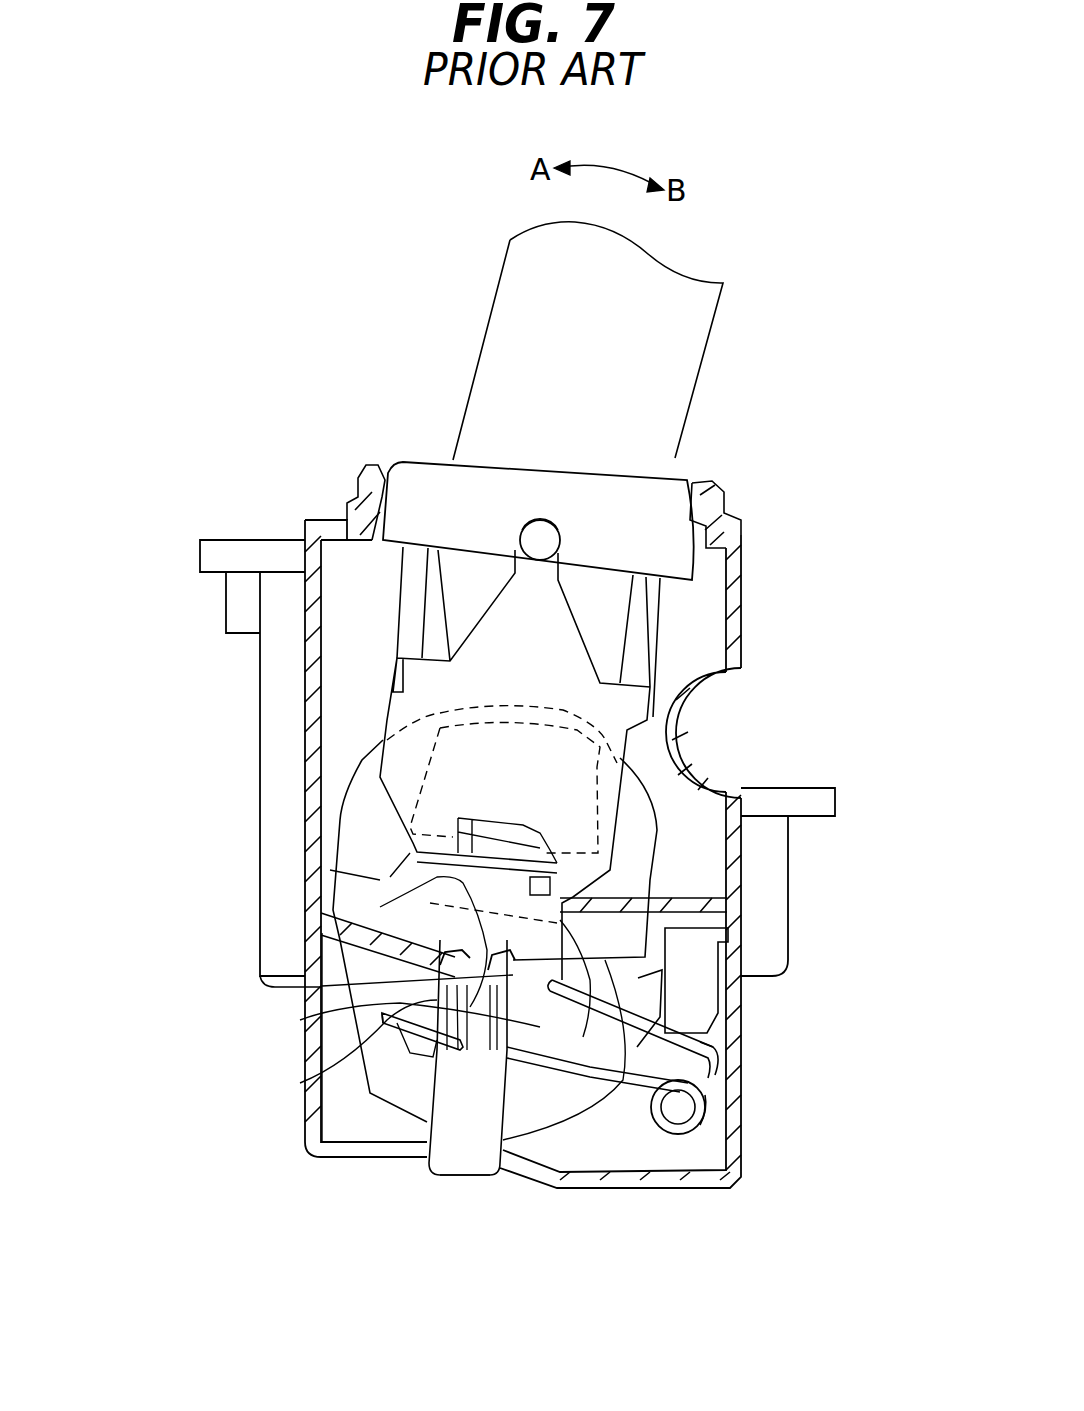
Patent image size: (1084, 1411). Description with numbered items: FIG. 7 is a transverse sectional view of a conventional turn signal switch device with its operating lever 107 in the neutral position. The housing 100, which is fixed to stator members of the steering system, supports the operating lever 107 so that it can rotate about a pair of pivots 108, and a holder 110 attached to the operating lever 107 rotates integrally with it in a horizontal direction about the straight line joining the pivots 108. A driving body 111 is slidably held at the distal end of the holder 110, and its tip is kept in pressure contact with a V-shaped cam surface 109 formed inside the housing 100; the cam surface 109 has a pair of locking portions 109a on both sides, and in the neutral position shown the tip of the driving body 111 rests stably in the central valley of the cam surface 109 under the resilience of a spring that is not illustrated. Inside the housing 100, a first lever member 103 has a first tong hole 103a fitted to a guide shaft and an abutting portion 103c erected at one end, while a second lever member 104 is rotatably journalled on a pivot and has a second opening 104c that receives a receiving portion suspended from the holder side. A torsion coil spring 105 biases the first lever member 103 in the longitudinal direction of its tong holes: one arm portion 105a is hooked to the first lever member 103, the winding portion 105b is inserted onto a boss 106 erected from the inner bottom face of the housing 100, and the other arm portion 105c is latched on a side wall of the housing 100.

The housing 100 is at (303, 718).
The first lever member 103 is at (424, 1093).
The first tong hole 103a is at (485, 1000).
The abutting portion 103c is at (455, 1163).
The second lever member 104 is at (344, 811).
The second opening 104c is at (603, 800).
The torsion coil spring 105 is at (645, 1085).
The one arm portion 105a is at (430, 1040).
The winding portion 105b is at (703, 1105).
The other arm portion 105c is at (707, 1033).
The boss 106 is at (678, 1110).
The operating lever 107 is at (491, 324).
The pivots 108 is at (540, 540).
The cam surface 109 is at (548, 1045).
The locking portions 109a is at (560, 1000).
The holder 110 is at (538, 640).
The driving body 111 is at (492, 962).